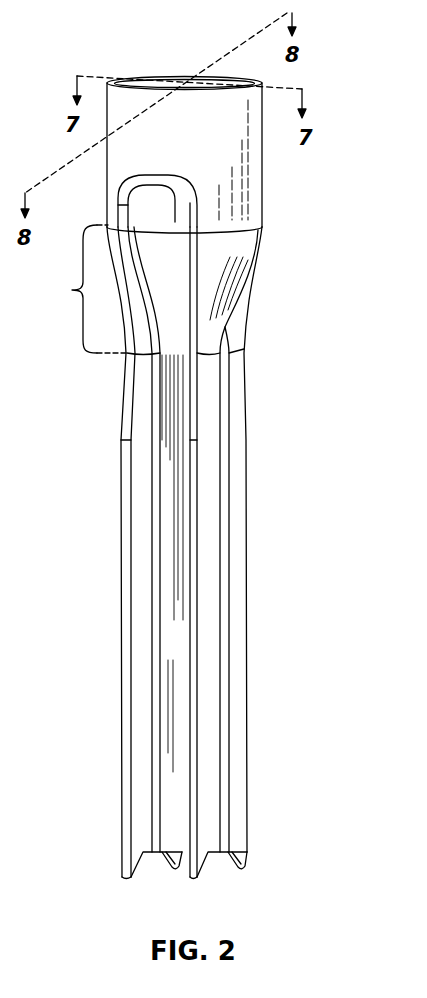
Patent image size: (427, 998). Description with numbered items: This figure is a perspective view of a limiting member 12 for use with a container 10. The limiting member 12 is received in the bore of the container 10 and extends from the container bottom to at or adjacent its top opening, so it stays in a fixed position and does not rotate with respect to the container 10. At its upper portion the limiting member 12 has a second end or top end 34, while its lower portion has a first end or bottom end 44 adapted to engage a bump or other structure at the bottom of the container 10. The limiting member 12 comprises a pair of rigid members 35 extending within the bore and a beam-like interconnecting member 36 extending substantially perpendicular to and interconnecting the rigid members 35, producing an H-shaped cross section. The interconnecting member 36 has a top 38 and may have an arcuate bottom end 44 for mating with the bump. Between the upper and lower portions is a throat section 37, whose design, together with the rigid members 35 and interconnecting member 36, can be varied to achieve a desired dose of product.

The container 10 is at (171, 466).
The limiting member 12 is at (275, 400).
The top end 34 is at (143, 78).
The rigid members 35 is at (123, 497).
The interconnecting member 36 is at (172, 530).
The throat section 37 is at (72, 290).
The top of interconnecting member 38 is at (138, 222).
The bottom end 44 is at (216, 853).